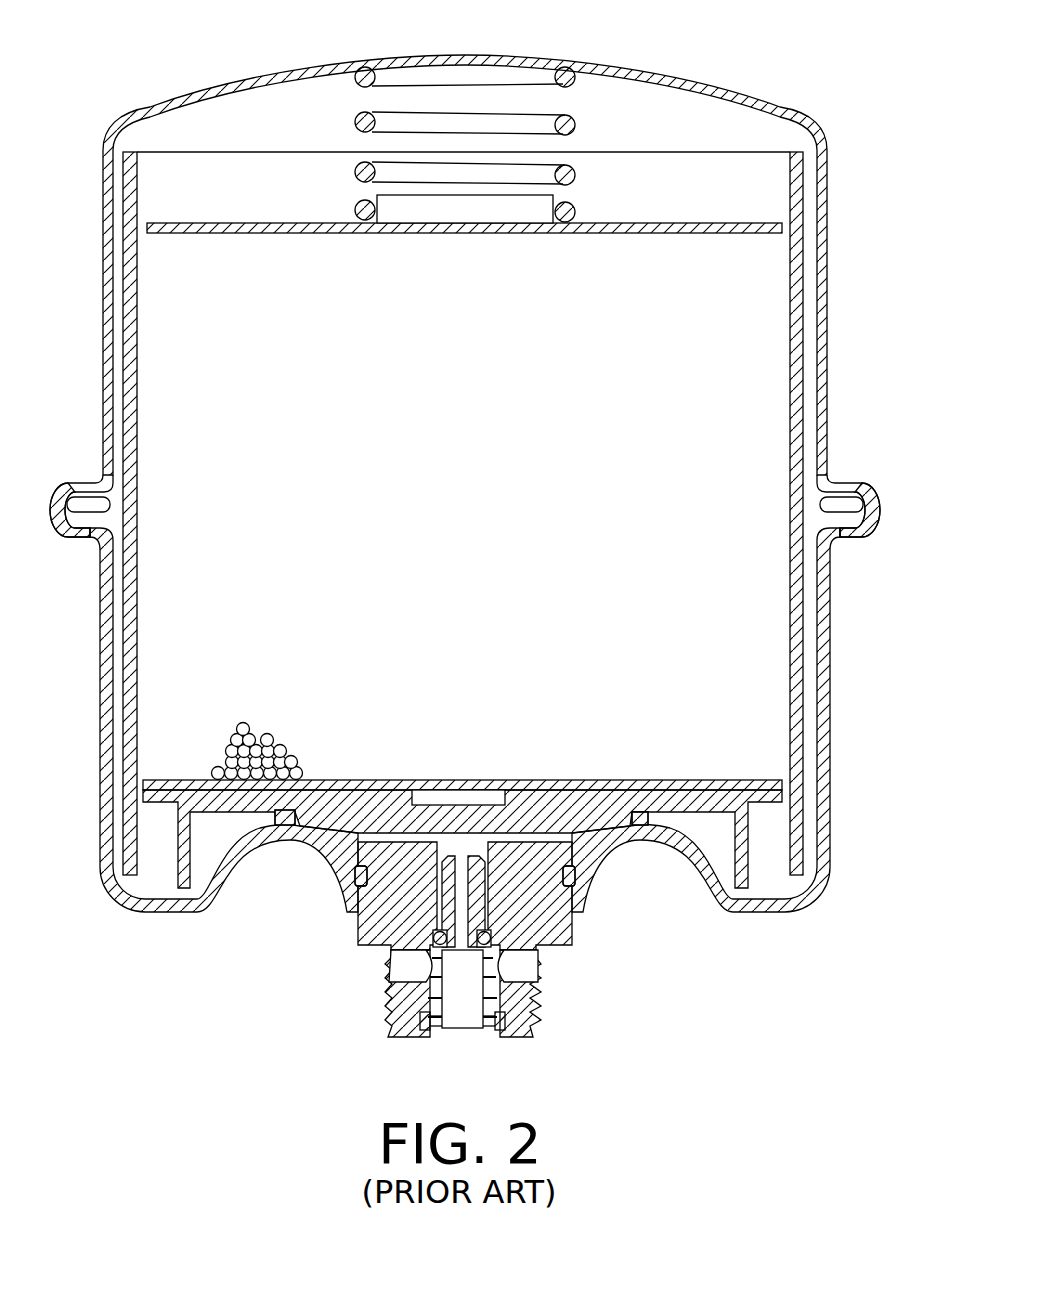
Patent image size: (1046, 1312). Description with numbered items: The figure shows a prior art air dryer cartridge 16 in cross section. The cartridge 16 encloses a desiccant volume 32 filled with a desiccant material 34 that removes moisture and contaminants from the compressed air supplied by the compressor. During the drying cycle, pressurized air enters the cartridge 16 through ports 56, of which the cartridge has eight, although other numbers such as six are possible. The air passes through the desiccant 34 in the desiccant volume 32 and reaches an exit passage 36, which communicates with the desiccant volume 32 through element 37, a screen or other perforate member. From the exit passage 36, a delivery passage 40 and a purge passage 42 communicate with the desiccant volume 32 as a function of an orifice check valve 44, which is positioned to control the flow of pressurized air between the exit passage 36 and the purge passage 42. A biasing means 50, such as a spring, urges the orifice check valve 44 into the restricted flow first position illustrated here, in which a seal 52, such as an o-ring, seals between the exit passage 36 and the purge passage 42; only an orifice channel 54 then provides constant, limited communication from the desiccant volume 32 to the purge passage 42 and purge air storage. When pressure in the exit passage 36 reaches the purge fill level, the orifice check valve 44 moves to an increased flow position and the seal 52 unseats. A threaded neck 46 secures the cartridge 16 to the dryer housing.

The cartridge 16 is at (718, 70).
The desiccant volume 32 is at (162, 375).
The desiccant material 34 is at (253, 730).
The exit passage 36 is at (478, 852).
The element 37 is at (637, 788).
The delivery passage 40 is at (427, 987).
The purge passage 42 is at (473, 1030).
The orifice check valve 44 is at (465, 1017).
The threaded neck 46 is at (538, 1020).
The biasing means 50 is at (417, 1018).
The seal 52 is at (427, 940).
The orifice channel 54 is at (462, 870).
The ports 56 is at (705, 882).